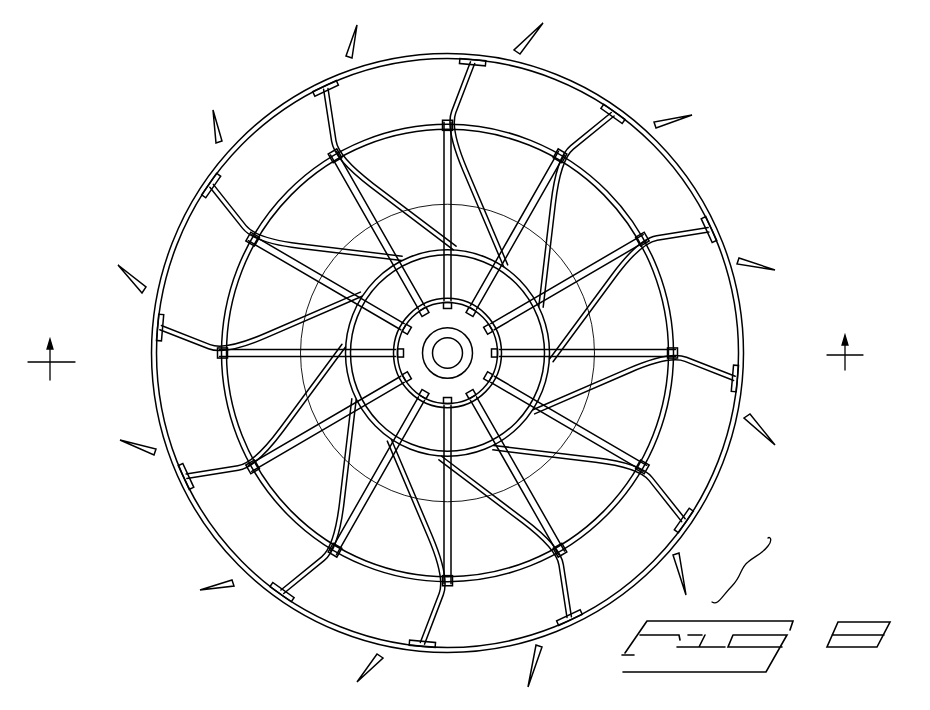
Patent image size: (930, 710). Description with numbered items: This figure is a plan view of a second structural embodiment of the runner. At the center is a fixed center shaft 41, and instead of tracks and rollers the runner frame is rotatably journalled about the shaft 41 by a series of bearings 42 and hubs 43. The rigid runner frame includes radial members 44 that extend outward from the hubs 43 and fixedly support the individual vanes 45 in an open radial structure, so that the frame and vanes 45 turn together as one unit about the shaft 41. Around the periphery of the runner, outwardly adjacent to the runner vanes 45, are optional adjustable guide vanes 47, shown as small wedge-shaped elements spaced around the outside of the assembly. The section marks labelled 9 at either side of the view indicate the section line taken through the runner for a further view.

The fixed center shaft 41 is at (452, 355).
The bearings 42 is at (456, 366).
The hubs 43 is at (482, 399).
The radial members 44 is at (443, 195).
The vanes 45 is at (281, 350).
The adjustable guide vanes 47 is at (138, 270).
The section line 9- 9 is at (446, 357).